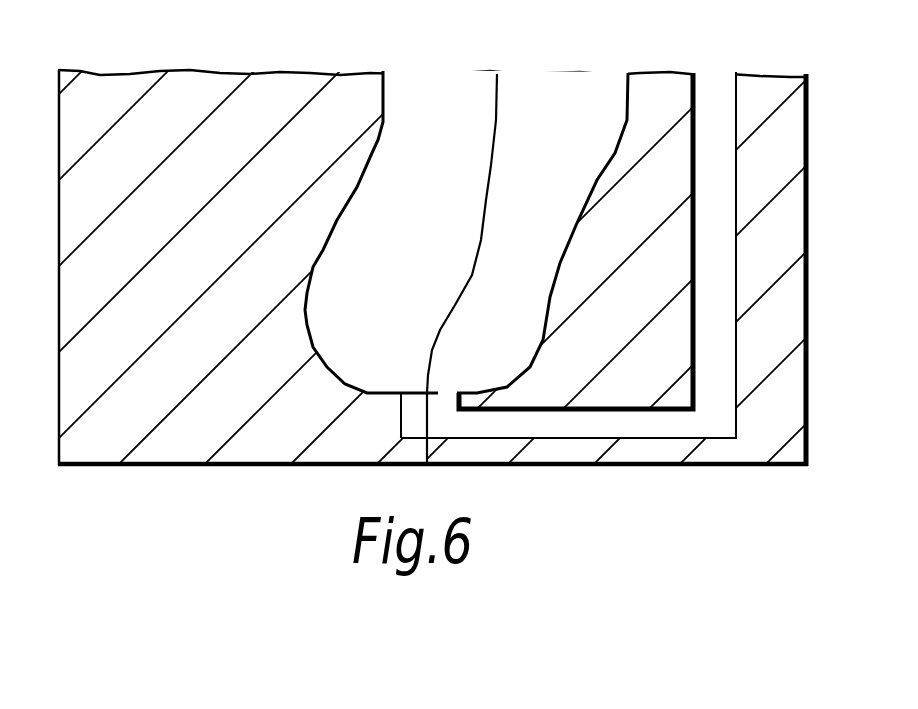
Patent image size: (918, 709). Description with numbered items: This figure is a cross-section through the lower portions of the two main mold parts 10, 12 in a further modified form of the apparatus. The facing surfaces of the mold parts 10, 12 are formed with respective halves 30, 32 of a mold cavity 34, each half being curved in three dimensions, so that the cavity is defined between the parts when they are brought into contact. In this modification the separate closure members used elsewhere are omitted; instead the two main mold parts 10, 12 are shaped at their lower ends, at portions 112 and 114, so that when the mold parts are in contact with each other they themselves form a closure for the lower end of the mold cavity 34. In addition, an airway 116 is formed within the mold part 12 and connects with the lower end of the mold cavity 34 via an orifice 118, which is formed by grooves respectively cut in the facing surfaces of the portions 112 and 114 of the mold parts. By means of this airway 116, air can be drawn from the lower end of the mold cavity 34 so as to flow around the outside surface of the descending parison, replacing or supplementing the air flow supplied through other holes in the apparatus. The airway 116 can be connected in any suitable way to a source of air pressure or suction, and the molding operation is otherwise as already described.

The main mold part 10 is at (183, 108).
The main mold part 12 is at (657, 92).
The half of mold cavity 30 is at (438, 185).
The half of mold cavity 32 is at (563, 185).
The mold cavity 34 is at (368, 356).
The portion of mold part 112 is at (372, 433).
The portion of mold part 114 is at (448, 447).
The airway 116 is at (647, 420).
The orifice 118 is at (440, 408).